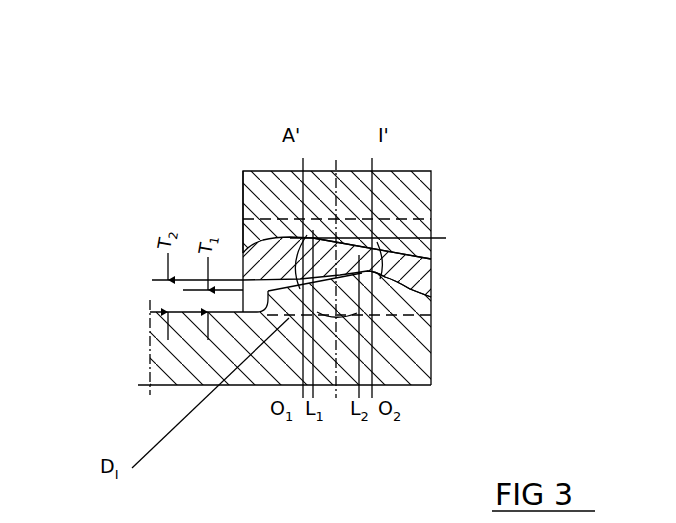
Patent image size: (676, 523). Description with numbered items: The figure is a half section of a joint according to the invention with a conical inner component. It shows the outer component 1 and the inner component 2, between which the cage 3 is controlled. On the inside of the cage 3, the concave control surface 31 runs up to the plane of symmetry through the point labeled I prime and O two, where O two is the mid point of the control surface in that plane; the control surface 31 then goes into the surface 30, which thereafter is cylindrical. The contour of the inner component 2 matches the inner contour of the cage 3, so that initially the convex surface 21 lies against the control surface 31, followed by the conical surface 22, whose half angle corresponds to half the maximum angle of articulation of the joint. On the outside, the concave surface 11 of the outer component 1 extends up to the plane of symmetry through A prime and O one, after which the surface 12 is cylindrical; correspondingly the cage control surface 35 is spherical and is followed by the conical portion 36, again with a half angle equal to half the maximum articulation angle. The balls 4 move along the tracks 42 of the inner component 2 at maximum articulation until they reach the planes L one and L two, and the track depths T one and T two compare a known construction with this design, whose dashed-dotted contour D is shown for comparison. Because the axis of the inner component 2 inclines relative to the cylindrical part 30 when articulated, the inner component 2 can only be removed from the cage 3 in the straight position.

The outer component 1 is at (272, 183).
The inner component 2 is at (408, 339).
The cage 3 is at (430, 280).
The balls 4 is at (352, 220).
The concave surface 11 is at (243, 226).
The cylindrical surface 12 is at (446, 242).
The convex surface 21 is at (430, 270).
The conical surface 22 is at (322, 212).
The cylindrical surface 30 is at (243, 270).
The concave control surface 31 is at (430, 295).
The cage control surface 35 is at (258, 196).
The conical portion 36 is at (430, 253).
The tracks 42 is at (430, 305).